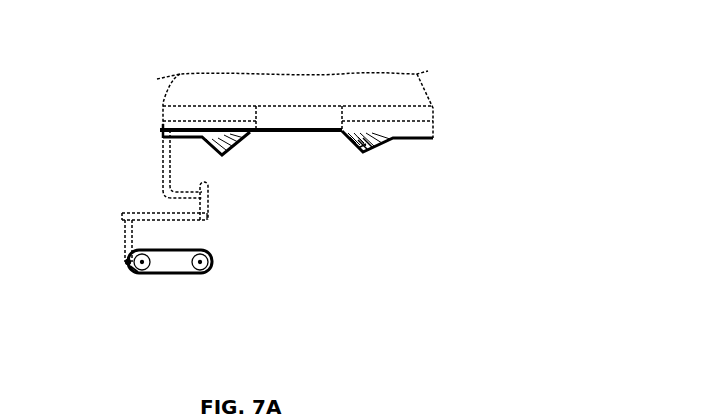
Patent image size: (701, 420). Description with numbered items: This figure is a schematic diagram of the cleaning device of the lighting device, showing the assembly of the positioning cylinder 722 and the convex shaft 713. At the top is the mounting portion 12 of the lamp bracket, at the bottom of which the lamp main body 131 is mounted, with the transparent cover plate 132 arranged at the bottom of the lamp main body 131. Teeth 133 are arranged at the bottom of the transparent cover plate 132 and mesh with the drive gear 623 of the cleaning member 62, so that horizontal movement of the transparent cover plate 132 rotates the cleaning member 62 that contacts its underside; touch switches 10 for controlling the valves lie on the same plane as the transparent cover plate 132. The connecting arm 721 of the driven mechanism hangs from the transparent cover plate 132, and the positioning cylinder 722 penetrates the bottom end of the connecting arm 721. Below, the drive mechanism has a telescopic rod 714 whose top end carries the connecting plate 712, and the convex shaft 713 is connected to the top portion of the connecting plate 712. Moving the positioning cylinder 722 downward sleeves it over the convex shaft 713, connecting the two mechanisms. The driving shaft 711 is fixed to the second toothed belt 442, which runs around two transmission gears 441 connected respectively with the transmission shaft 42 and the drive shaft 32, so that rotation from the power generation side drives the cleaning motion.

The mounting portion 12 is at (233, 82).
The lamp main body 131 is at (306, 112).
The transparent cover plate 132 is at (330, 127).
The teeth 133 is at (292, 132).
The cleaning member 62 is at (347, 142).
The drive gear 623 is at (364, 158).
The touch switches 10 is at (163, 128).
The connecting arm 721 is at (163, 180).
The positioning cylinder 722 is at (208, 197).
The convex shaft 713 is at (212, 214).
The connecting plate 712 is at (208, 220).
The telescopic rod 714 is at (125, 236).
The driving shaft 711 is at (128, 265).
The transmission shaft 42 is at (212, 258).
The transmission gears 441 is at (207, 272).
The second toothed belt 442 is at (173, 274).
The drive shaft 32 is at (136, 274).